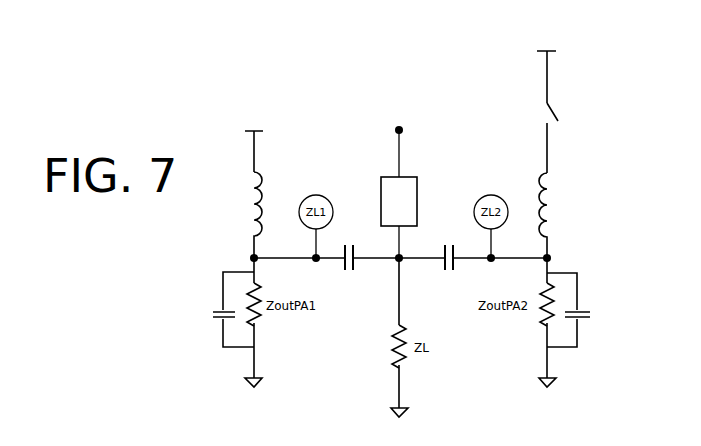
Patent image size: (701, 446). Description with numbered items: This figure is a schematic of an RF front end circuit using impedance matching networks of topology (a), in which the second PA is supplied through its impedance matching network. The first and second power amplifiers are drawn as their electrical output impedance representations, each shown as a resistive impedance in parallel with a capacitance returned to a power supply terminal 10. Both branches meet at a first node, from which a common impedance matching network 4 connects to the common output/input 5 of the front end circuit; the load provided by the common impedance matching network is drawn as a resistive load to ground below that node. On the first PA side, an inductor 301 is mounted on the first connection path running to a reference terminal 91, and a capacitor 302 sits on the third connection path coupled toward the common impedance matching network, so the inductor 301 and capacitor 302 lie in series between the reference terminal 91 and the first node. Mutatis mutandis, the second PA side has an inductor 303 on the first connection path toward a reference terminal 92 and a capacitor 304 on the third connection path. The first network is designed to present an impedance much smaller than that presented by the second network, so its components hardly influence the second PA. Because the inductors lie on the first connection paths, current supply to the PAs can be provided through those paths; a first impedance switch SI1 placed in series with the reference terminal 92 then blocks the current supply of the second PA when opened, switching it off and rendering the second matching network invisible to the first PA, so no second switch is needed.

The reference terminal 91 is at (248, 131).
The reference terminal 92 is at (540, 51).
The inductor 301 is at (263, 181).
The second inductor 303 is at (540, 175).
The capacitor 302 is at (345, 272).
The second capacitor 304 is at (445, 272).
The common impedance matching network 4 is at (418, 188).
The common output/input 5 is at (398, 128).
The power supply terminal 10 is at (258, 383).
The first impedance switch SI1 is at (556, 111).